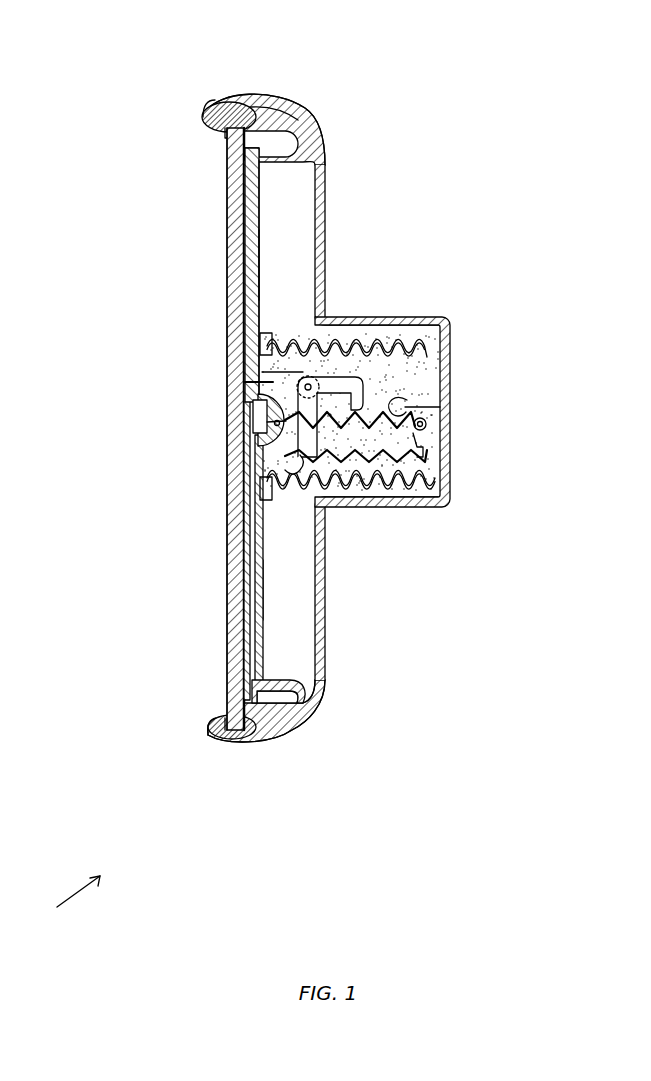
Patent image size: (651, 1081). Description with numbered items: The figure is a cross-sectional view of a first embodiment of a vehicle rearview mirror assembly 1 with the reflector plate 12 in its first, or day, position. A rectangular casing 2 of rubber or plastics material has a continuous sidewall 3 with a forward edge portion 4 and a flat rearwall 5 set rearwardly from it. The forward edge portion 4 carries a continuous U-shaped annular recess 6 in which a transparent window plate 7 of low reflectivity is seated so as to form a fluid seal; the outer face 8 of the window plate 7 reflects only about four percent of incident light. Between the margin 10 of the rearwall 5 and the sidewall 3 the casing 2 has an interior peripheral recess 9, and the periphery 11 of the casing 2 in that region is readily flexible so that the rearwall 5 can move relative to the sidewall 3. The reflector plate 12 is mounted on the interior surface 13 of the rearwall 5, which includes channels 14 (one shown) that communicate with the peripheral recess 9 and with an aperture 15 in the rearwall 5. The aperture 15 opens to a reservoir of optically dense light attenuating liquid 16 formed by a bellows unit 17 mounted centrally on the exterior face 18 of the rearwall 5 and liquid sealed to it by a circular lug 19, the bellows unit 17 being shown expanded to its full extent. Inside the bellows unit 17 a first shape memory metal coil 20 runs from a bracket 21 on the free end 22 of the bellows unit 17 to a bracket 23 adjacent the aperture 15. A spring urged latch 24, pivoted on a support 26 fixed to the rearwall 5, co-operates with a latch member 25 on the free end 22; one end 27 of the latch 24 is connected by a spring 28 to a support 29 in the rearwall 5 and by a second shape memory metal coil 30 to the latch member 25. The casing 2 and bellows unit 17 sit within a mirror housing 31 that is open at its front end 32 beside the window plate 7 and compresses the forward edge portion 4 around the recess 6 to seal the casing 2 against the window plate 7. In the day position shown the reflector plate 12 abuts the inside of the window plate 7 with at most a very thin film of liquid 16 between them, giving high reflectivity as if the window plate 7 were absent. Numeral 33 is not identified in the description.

The vehicle rearview mirror assembly 1 is at (71, 899).
The casing 2 is at (279, 118).
The continuous sidewall 3 is at (292, 130).
The forward edge portion 4 is at (233, 110).
The rearwall 5 is at (257, 197).
The U-shaped annular recess 6 is at (242, 113).
The window plate 7 is at (240, 567).
The outer face 8 is at (228, 208).
The interior peripheral recess 9 is at (281, 143).
The margin 10 is at (270, 677).
The periphery 11 is at (265, 688).
The reflector plate 12 is at (244, 617).
The interior surface 13 is at (258, 230).
The channels 14 is at (262, 634).
The aperture 15 is at (255, 425).
The optically dense light attenuating liquid 16 is at (418, 372).
The bellows unit 17 is at (401, 342).
The exterior face 18 is at (260, 253).
The circular lug 19 is at (266, 343).
The first shape memory metal coil 20 is at (425, 405).
The bracket 21 is at (428, 427).
The free end 22 is at (430, 462).
The bracket 23 is at (252, 441).
The spring urged latch 24 is at (345, 378).
The latch member 25 is at (440, 407).
The support 26 is at (245, 382).
The end of the latch 27 is at (341, 502).
The spring 28 is at (292, 482).
The support 29 is at (257, 456).
The second shape memory metal coil 30 is at (412, 457).
The mirror housing 31 is at (448, 323).
The front end 32 is at (208, 109).
The bead shoulder 33 is at (222, 140).